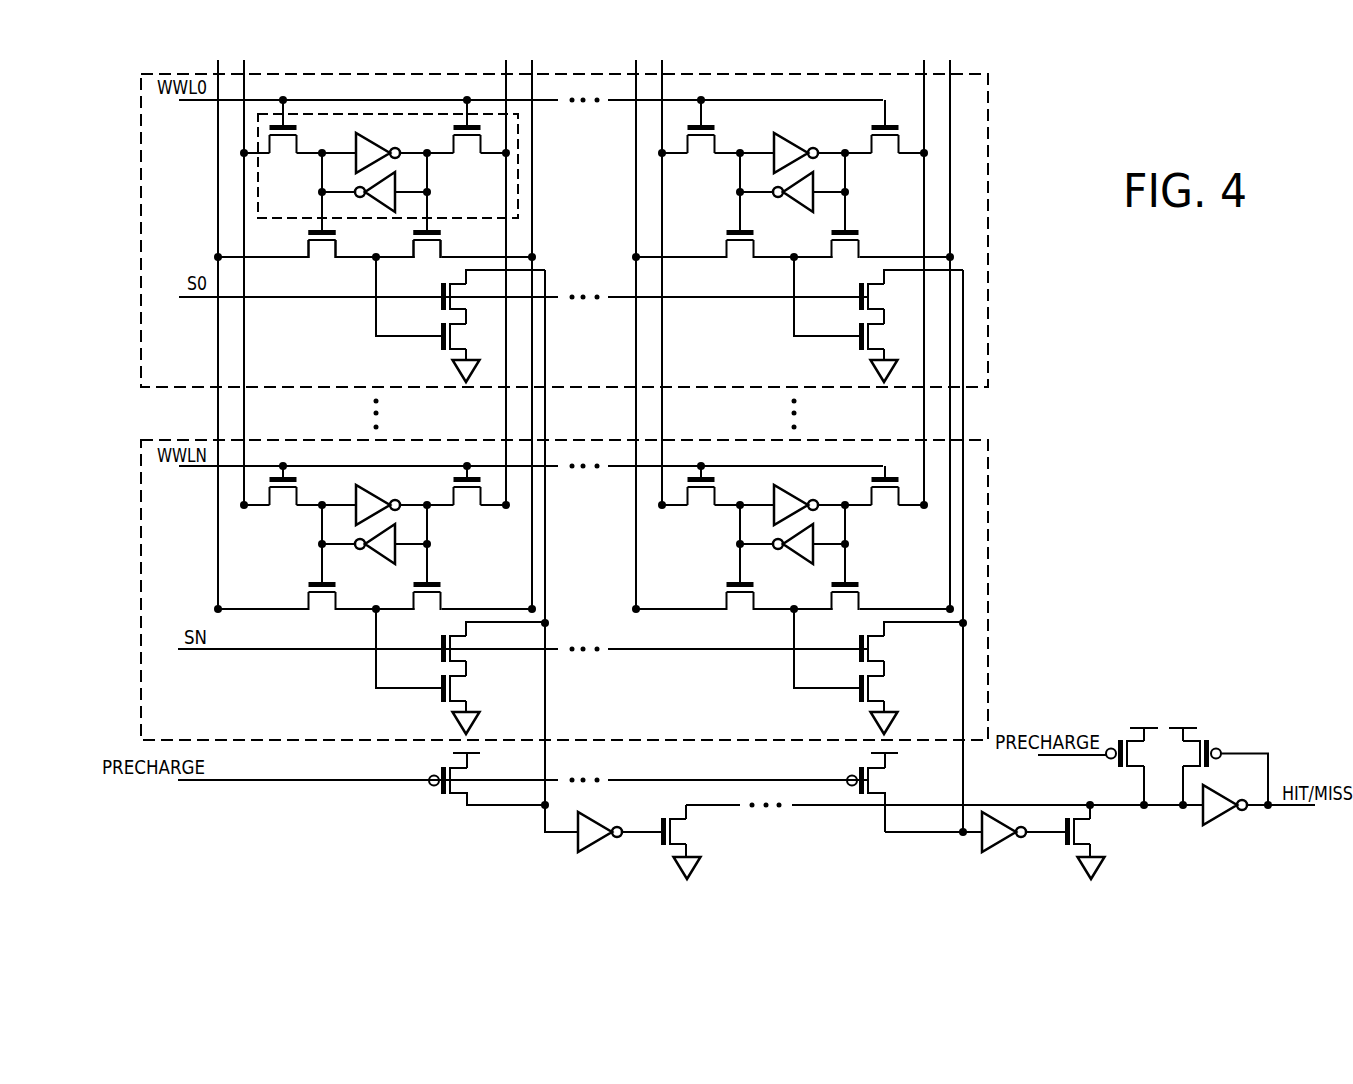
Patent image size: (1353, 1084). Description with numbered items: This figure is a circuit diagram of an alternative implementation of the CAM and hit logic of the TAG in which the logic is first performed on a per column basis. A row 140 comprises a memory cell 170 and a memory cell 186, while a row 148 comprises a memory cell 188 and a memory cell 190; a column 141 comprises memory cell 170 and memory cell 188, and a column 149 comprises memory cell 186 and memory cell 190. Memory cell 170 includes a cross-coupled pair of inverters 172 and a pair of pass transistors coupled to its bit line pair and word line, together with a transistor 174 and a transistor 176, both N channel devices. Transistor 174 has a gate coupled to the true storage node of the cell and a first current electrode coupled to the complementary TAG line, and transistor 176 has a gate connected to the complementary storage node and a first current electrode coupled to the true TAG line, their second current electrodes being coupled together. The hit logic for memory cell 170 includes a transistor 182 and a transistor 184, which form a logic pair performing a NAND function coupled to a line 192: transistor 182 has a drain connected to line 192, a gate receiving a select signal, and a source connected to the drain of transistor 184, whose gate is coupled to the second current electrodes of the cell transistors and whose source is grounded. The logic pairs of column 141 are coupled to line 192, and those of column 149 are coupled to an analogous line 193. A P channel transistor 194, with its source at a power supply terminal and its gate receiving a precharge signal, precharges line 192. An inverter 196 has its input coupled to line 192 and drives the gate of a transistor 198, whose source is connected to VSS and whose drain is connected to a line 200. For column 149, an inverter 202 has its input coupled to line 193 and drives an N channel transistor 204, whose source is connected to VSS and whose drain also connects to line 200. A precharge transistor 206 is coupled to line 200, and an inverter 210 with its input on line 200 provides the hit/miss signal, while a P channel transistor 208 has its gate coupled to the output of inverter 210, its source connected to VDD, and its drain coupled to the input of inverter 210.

The row 140 is at (133, 102).
The column 141 is at (365, 68).
The row 148 is at (133, 485).
The column 149 is at (785, 68).
The memory cell 170 is at (210, 168).
The storage latch 172 is at (519, 175).
The transistor 174 is at (322, 244).
The transistor 176 is at (427, 244).
The transistor 182 is at (438, 306).
The transistor 184 is at (452, 336).
The memory cell 186 is at (627, 168).
The memory cell 188 is at (210, 532).
The memory cell 190 is at (627, 532).
The line 192 is at (545, 590).
The line 193 is at (963, 688).
The transistor 194 is at (504, 808).
The inverter 196 is at (598, 846).
The transistor 198 is at (673, 830).
The line 200 is at (838, 806).
The inverter 202 is at (1006, 846).
The N channel transistor 204 is at (1078, 830).
The precharge transistor 206 is at (1118, 740).
The P channel transistor 208 is at (1213, 740).
The inverter 210 is at (1225, 820).